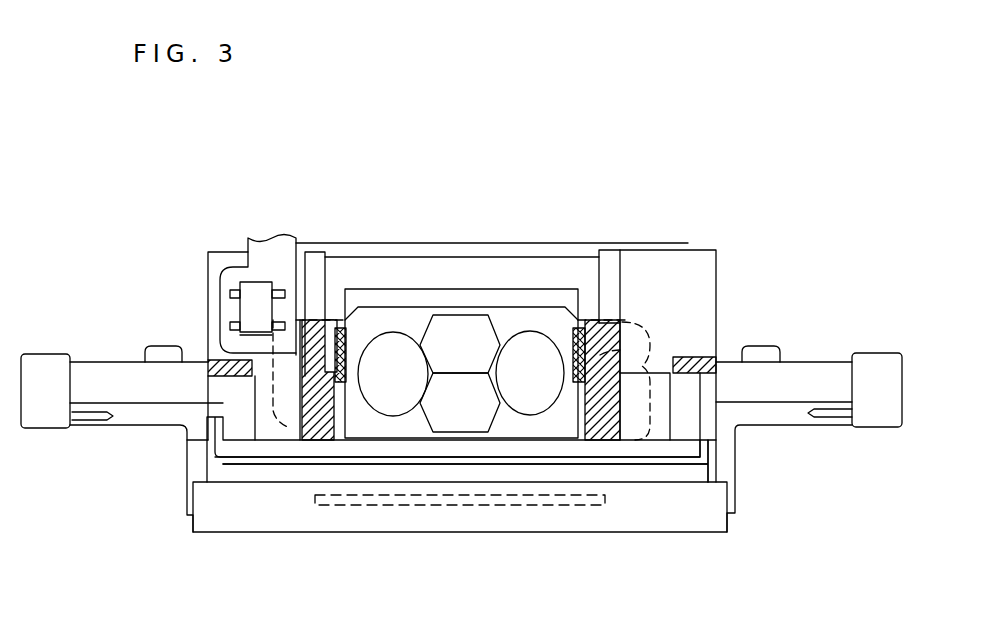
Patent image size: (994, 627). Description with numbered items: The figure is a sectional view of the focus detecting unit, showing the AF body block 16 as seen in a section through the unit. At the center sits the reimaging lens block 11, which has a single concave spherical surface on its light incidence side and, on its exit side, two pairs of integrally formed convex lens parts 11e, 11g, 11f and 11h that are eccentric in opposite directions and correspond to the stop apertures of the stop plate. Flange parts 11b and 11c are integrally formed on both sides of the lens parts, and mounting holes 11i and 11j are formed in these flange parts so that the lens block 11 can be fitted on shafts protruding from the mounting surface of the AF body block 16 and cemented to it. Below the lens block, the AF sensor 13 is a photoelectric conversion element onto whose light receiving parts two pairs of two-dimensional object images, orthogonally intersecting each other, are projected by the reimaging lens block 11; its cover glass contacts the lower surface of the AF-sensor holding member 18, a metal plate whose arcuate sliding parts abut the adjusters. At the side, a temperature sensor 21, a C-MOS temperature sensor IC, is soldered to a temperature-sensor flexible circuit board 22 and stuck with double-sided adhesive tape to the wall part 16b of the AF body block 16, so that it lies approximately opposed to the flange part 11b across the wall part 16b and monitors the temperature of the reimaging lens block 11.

The reimaging lens block 11 is at (520, 316).
The flange part 11b is at (268, 440).
The flange part 11c is at (625, 325).
The lens part 11e is at (460, 326).
The lens part 11f is at (392, 352).
The lens part 11g is at (460, 418).
The lens part 11h is at (540, 390).
The mounting hole 11i is at (318, 410).
The mounting hole 11j is at (620, 357).
The AF sensor 13 is at (683, 522).
The AF body block 16 is at (705, 262).
The wall part 16b is at (212, 337).
The AF-sensor holding member 18 is at (706, 447).
The temperature sensor 21 is at (245, 296).
The temperature-sensor flexible circuit board 22 is at (275, 252).